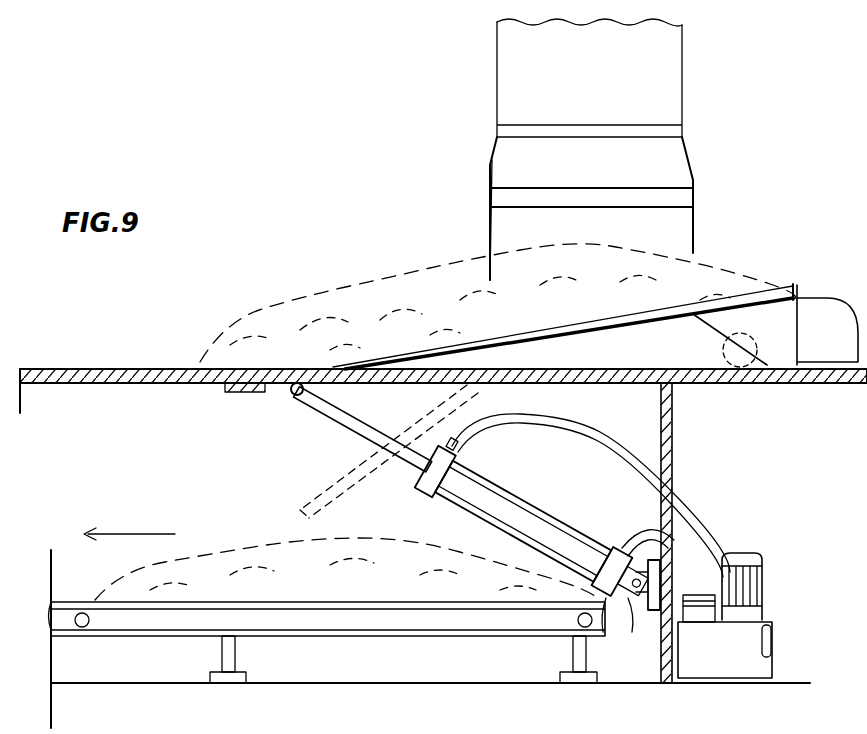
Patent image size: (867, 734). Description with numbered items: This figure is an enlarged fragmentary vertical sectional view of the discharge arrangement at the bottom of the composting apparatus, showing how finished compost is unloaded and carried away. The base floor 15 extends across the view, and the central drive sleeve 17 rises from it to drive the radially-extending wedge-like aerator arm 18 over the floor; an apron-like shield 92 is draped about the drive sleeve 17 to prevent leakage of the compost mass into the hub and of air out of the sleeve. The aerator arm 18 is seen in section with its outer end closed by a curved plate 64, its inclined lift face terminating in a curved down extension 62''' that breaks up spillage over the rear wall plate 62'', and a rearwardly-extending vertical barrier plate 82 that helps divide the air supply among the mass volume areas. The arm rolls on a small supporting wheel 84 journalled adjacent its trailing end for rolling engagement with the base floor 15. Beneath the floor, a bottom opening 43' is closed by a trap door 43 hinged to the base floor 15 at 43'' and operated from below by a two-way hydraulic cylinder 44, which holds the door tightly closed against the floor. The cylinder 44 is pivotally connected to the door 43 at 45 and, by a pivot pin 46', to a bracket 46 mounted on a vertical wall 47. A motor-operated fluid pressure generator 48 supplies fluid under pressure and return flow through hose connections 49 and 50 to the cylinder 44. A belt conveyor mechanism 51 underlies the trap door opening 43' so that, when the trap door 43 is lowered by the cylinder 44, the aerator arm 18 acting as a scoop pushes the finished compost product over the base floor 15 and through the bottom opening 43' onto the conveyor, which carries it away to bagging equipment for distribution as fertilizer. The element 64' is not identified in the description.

The base floor 15 is at (148, 383).
The drive sleeve 17 is at (658, 68).
The aerator arm 18 is at (663, 363).
The trap door 43 is at (326, 454).
The bottom opening 43' is at (245, 301).
The trap door hinge 43'' is at (417, 451).
The hydraulic cylinder 44 is at (515, 515).
The cylinder-to-door pivot connection 45 is at (292, 396).
The bracket 46 is at (631, 625).
The pivot pin 46' is at (633, 619).
The vertical wall 47 is at (668, 485).
The motor-operated fluid pressure generator 48 is at (762, 580).
The hose connection 49 is at (566, 425).
The hose connection 50 is at (636, 540).
The belt conveyor mechanism 51 is at (358, 640).
The rear wall plate 62'' is at (830, 403).
The curved down extension 62''' is at (820, 195).
The curved plate 64 is at (563, 357).
The ramp plate raised edge 64' is at (753, 286).
The vertical barrier plate 82 is at (812, 318).
The supporting wheel 84 is at (752, 366).
The apron-like shield 92 is at (498, 173).